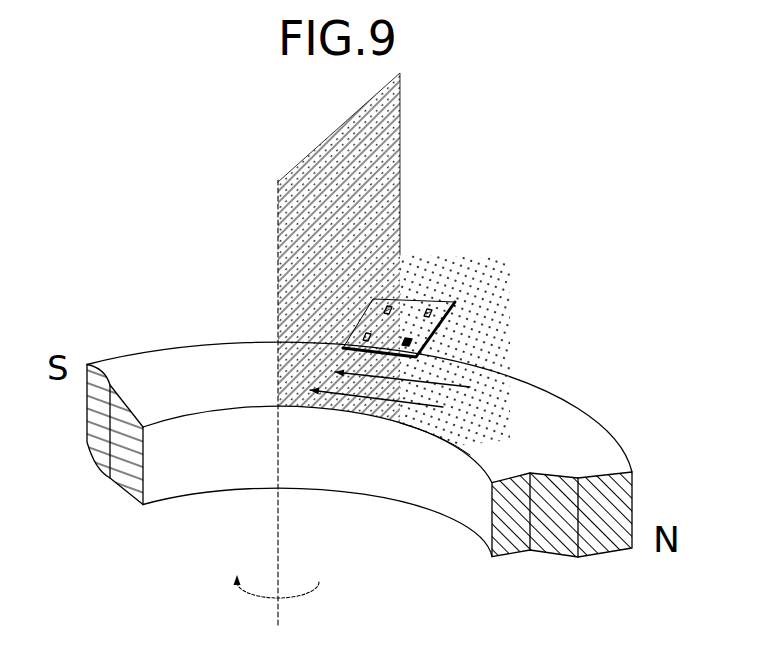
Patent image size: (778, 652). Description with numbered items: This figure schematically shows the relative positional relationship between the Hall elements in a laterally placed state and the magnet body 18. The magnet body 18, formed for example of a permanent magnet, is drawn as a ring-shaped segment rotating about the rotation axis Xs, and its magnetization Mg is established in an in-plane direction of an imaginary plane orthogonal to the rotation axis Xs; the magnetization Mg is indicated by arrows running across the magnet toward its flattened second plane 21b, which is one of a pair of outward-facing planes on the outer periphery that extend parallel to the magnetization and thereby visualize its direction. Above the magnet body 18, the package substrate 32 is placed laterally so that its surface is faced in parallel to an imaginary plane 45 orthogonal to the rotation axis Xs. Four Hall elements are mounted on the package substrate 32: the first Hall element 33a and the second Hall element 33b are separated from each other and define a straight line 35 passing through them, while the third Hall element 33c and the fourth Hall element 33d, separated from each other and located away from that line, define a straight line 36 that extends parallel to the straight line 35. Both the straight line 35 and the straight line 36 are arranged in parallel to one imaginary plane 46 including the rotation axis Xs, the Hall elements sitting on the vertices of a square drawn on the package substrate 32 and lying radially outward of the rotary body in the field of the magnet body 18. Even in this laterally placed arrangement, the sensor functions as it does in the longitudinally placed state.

The magnet body 18 is at (359, 413).
The second plane 21b is at (445, 356).
The package substrate 32 is at (372, 300).
The first Hall element 33a is at (388, 305).
The second Hall element 33b is at (364, 334).
The third Hall element 33c is at (445, 298).
The fourth Hall element 33d is at (414, 337).
The straight line 35 is at (417, 269).
The straight line 36 is at (455, 272).
The imaginary plane 45 is at (455, 430).
The imaginary plane 46 is at (288, 254).
The rotation axis Xs is at (277, 222).
The magnetization Mg is at (352, 398).